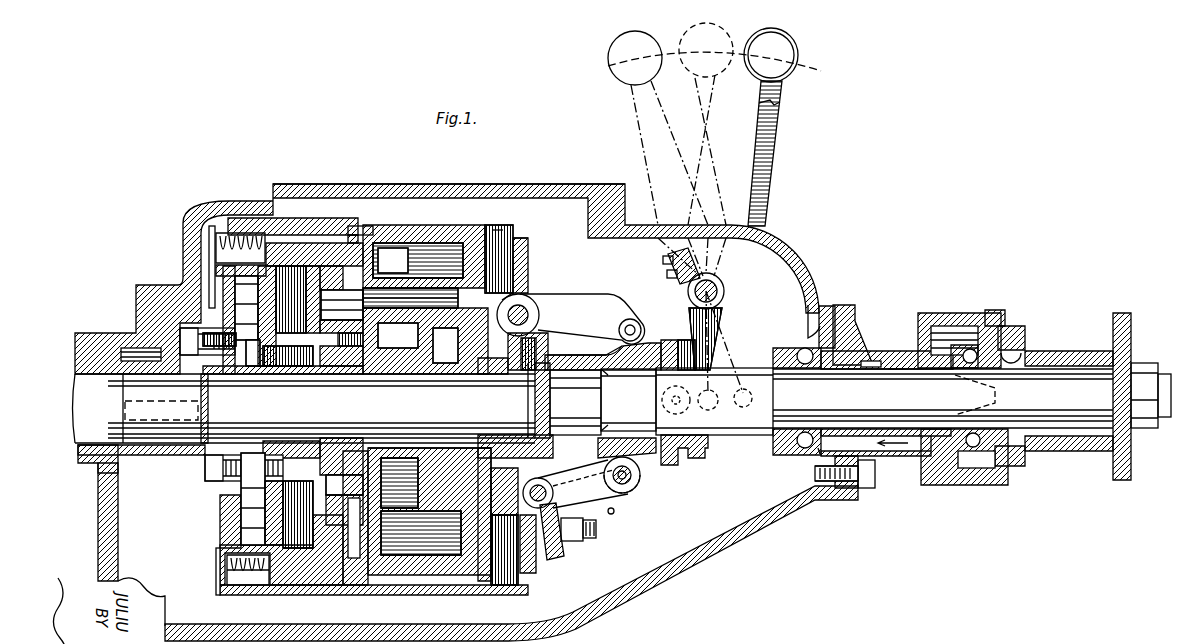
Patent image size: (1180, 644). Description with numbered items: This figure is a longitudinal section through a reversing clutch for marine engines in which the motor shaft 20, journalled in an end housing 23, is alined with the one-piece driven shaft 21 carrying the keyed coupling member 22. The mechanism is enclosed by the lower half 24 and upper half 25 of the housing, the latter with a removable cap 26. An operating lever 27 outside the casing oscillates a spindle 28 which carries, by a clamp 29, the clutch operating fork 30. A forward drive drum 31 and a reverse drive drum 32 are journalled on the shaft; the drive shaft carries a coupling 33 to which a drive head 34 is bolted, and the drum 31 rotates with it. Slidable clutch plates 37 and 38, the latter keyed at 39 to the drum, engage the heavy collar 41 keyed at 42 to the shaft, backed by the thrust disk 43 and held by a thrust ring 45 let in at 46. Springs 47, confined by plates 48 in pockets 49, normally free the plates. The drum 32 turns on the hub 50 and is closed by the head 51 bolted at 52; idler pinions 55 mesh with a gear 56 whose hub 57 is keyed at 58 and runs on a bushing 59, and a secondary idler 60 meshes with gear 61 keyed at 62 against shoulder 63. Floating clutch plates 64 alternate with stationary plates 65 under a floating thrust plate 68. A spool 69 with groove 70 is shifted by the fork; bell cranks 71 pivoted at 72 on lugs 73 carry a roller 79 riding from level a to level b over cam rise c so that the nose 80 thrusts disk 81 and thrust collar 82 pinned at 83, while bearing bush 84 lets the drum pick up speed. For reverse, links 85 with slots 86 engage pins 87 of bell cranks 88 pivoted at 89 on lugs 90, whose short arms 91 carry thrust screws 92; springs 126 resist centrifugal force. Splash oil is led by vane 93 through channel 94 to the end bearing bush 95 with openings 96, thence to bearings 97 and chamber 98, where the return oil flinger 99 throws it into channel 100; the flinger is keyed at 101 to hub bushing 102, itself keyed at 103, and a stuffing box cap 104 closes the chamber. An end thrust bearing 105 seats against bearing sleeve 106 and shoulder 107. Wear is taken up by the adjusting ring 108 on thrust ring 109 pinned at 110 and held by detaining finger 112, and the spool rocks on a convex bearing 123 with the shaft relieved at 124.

The motor shaft 20 is at (75, 398).
The driven shaft 21 is at (1062, 360).
The coupling member 22 is at (1090, 440).
The end housing 23 is at (90, 480).
The lower half of the housing 24 is at (425, 626).
The upper half of the housing 25 is at (180, 218).
The removable cap 26 is at (372, 178).
The operating lever 27 is at (752, 170).
The spindle 28 is at (712, 275).
The clamp 29 is at (657, 252).
The clutch operating fork 30 is at (705, 312).
The forward drive drum 31 is at (290, 222).
The reverse drive drum 32 is at (420, 235).
The coupling 33 is at (142, 448).
The drive head 34 is at (216, 298).
The clutch plates 37 is at (262, 490).
The clutch plates 38 is at (298, 540).
The key 39 is at (286, 540).
The heavy collar 41 is at (305, 366).
The key 42 is at (250, 366).
The thrust disk 43 is at (258, 510).
The thrust ring 45 is at (270, 440).
The seat for thrust ring 46 is at (252, 390).
The springs 47 is at (232, 223).
The plates 48 is at (200, 238).
The pockets 49 is at (252, 257).
The hub of the drum 50 is at (355, 366).
The head 51 is at (488, 220).
The bolts 52 is at (348, 587).
The idler pinions 55 is at (388, 255).
The gear 56 is at (393, 370).
The hub of the gear 57 is at (343, 428).
The key 58 is at (330, 366).
The bushing 59 is at (405, 438).
The secondary idler 60 is at (432, 250).
The gear 61 is at (440, 438).
The key 62 is at (452, 366).
The shoulder 63 is at (472, 380).
The floating clutch plates 64 is at (506, 224).
The clutch plates 65 is at (497, 220).
The floating thrust plate 68 is at (521, 242).
The spool 69 is at (578, 347).
The annular groove 70 is at (675, 457).
The bell cranks 71 is at (572, 288).
The pivot 72 is at (521, 302).
The lugs 73 is at (520, 290).
The anti-friction roller 79 is at (628, 312).
The nose 80 is at (500, 340).
The disk 81 is at (512, 440).
The thrust collar 82 is at (542, 347).
The pin 83 is at (575, 402).
The bearing bush 84 is at (405, 490).
The links 85 is at (630, 478).
The slots 86 is at (618, 482).
The pins 87 is at (633, 467).
The bell cranks 88 is at (598, 476).
The pivot pins 89 is at (545, 482).
The lugs 90 is at (515, 486).
The short arms 91 is at (550, 540).
The adjustable thrust screws 92 is at (585, 532).
The inclined vane 93 is at (812, 295).
The channel 94 is at (855, 320).
The end bearing bush 95 is at (896, 362).
The openings 96 is at (860, 360).
The bearings 97 is at (945, 352).
The chamber 98 is at (932, 320).
The return oil flinger 99 is at (980, 304).
The channel 100 is at (906, 449).
The key 101 is at (1015, 335).
The hub bushing 102 is at (1022, 360).
The key 103 is at (1052, 436).
The stuffing box cap 104 is at (1012, 460).
The end thrust bearing 105 is at (793, 449).
The bearing sleeve 106 is at (875, 472).
The shoulder 107 is at (770, 390).
The adjusting ring 108 is at (356, 288).
The thrust ring 109 is at (370, 296).
The pin 110 is at (275, 366).
The detaining finger 112 is at (345, 216).
The rocking bearing 123 is at (700, 428).
The relief 124 is at (698, 401).
The spring 126 is at (598, 380).
The level a is at (560, 350).
The level b is at (660, 332).
The cam rise c is at (611, 345).